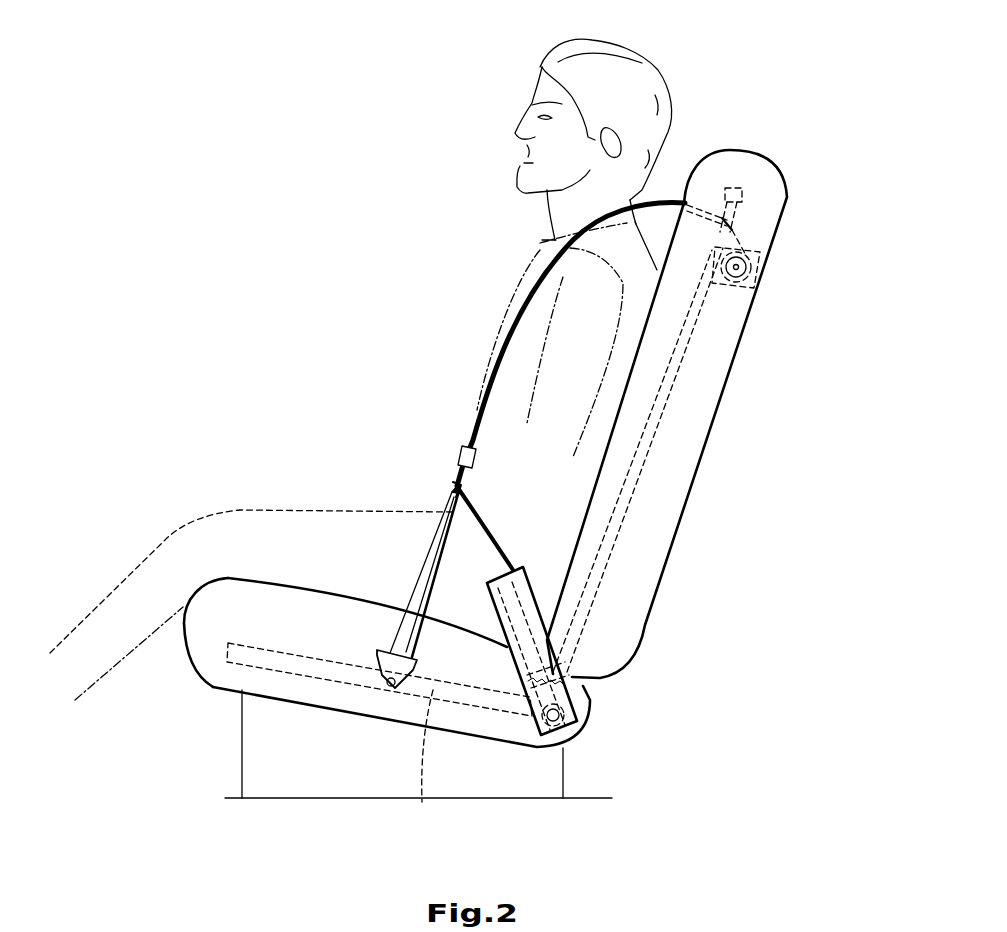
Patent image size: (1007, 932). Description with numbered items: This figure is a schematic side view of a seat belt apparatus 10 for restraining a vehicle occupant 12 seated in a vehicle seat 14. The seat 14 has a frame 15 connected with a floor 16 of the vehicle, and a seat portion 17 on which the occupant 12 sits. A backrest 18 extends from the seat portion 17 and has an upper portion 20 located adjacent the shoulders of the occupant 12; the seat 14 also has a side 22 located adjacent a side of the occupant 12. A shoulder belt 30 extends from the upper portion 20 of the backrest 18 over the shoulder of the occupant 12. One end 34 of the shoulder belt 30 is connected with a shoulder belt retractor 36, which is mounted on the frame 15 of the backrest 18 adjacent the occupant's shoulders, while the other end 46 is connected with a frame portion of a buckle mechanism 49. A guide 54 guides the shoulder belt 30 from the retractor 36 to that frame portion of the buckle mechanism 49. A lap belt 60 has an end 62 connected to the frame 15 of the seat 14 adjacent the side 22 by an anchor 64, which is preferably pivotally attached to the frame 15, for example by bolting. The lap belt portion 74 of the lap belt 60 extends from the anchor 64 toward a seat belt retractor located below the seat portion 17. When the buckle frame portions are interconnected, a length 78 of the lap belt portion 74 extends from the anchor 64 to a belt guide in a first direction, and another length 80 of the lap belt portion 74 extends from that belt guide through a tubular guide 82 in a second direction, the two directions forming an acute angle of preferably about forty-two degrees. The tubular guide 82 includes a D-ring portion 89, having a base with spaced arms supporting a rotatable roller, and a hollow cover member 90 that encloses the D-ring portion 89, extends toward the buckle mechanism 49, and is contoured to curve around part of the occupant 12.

The seat belt apparatus 10 is at (412, 108).
The vehicle occupant 12 is at (598, 70).
The vehicle seat 14 is at (690, 498).
The frame 15 is at (660, 412).
The floor 16 is at (592, 798).
The seat portion 17 is at (200, 648).
The backrest 18 is at (663, 533).
The upper portion of the backrest 20 is at (767, 180).
The side of the seat 22 is at (283, 687).
The shoulder belt 30 is at (520, 307).
The end of the shoulder belt 34 is at (735, 237).
The shoulder belt retractor 36 is at (748, 287).
The end of the shoulder belt 46 is at (482, 412).
The buckle mechanism 49 is at (400, 422).
The guide 54 is at (735, 188).
The lap belt 60 is at (442, 537).
The end of the lap belt 62 is at (398, 645).
The anchor 64 is at (387, 667).
The lap belt portion 74 is at (436, 556).
The length of the lap belt portion 78 is at (418, 583).
The length of the lap belt portion 80 is at (481, 525).
The tubular guide 82 is at (560, 636).
The D-ring portion 89 is at (597, 690).
The hollow cover member 90 is at (530, 604).